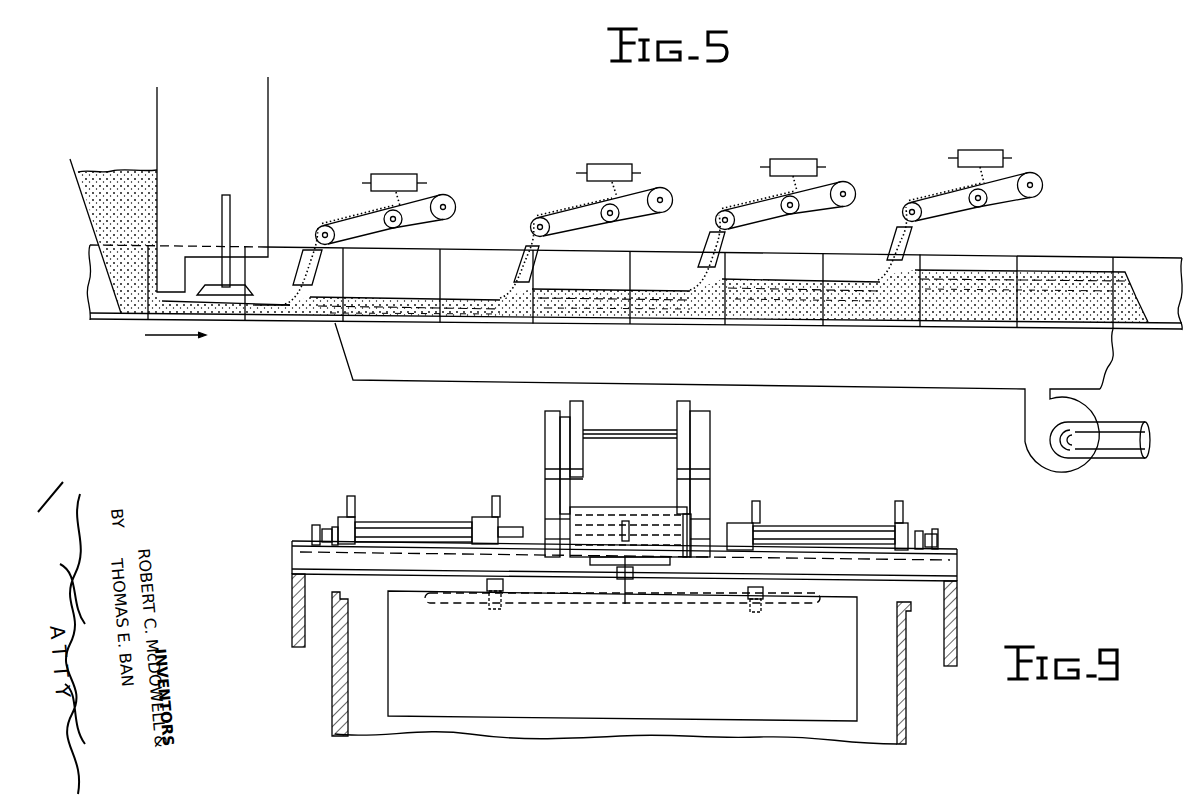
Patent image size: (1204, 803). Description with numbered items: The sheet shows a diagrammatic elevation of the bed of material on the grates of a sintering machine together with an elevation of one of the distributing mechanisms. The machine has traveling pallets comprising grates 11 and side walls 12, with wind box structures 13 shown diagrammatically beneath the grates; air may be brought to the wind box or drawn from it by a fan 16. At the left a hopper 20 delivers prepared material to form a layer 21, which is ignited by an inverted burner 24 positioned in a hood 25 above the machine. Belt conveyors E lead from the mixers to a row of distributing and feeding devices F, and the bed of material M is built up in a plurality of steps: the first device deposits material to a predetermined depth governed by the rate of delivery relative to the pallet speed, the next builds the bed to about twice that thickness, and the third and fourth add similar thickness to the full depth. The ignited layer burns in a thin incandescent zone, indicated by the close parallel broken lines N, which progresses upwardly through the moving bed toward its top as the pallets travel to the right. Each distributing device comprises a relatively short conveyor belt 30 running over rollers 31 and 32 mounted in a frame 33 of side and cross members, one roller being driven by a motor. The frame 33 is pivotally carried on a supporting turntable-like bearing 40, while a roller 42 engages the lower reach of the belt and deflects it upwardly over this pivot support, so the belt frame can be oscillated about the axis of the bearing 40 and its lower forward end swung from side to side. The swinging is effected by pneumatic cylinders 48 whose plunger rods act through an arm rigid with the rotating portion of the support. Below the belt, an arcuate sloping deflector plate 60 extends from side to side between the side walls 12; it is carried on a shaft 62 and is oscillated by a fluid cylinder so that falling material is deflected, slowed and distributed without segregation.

In FIG. 5, the grates 11 is at (120, 318).
In FIG. 5, the side walls 12 is at (450, 248).
In FIG. 9, the side walls 12 is at (906, 703).
In FIG. 5, the wind box structures 13 is at (958, 379).
In FIG. 5, the fan 16 is at (1032, 453).
In FIG. 5, the hopper 20 is at (75, 160).
In FIG. 5, the layer 21 is at (262, 304).
In FIG. 5, the inverted burner 24 is at (200, 280).
In FIG. 5, the hood 25 is at (265, 190).
In FIG. 5, the conveyor belt 30 is at (646, 193).
In FIG. 9, the conveyor belt 30 is at (625, 440).
In FIG. 5, the roller 31 is at (657, 209).
In FIG. 5, the roller 32 is at (550, 226).
In FIG. 9, the roller 32 is at (687, 530).
In FIG. 9, the frame 33 is at (547, 461).
In FIG. 9, the supporting turntable like bearing 40 is at (585, 520).
In FIG. 5, the roller 42 is at (611, 220).
In FIG. 9, the pneumatic cylinders 48 is at (405, 525).
In FIG. 9, the arcuate sloping deflector plate 60 is at (622, 656).
In FIG. 9, the shaft 62 is at (552, 603).
In FIG. 5, the belt conveyors E is at (405, 172).
In FIG. 5, the distributing and feeding devices F is at (342, 204).
In FIG. 5, the bed of material M is at (790, 305).
In FIG. 5, the incandescent zone N is at (598, 316).